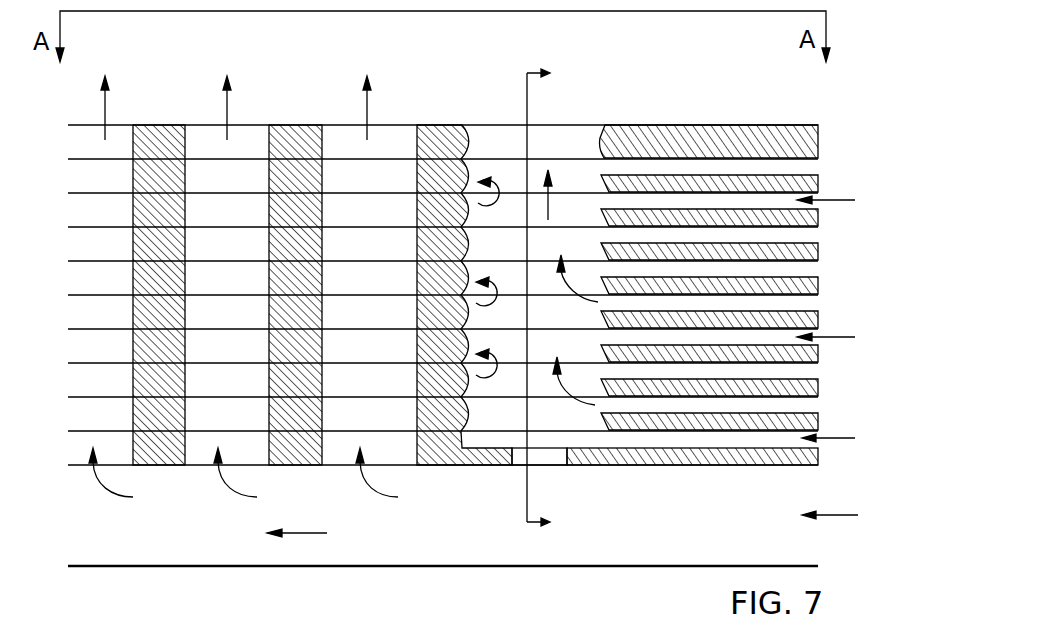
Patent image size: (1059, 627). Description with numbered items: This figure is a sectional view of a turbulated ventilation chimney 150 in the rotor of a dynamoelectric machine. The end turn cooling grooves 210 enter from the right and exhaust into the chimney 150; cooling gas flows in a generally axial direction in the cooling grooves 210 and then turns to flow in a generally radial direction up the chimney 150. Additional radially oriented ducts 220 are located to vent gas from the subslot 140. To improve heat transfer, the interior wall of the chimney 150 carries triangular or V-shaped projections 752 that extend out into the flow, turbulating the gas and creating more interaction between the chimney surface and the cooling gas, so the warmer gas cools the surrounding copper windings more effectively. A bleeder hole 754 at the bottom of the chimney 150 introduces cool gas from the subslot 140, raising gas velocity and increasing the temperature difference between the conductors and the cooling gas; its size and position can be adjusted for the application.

The subslot 140 is at (759, 516).
The ventilation chimney 150 is at (542, 140).
The end turn cooling grooves 210 is at (808, 271).
The radially oriented ducts 220 is at (348, 130).
The projections 752 is at (470, 130).
The bleeder hole 754 is at (525, 457).